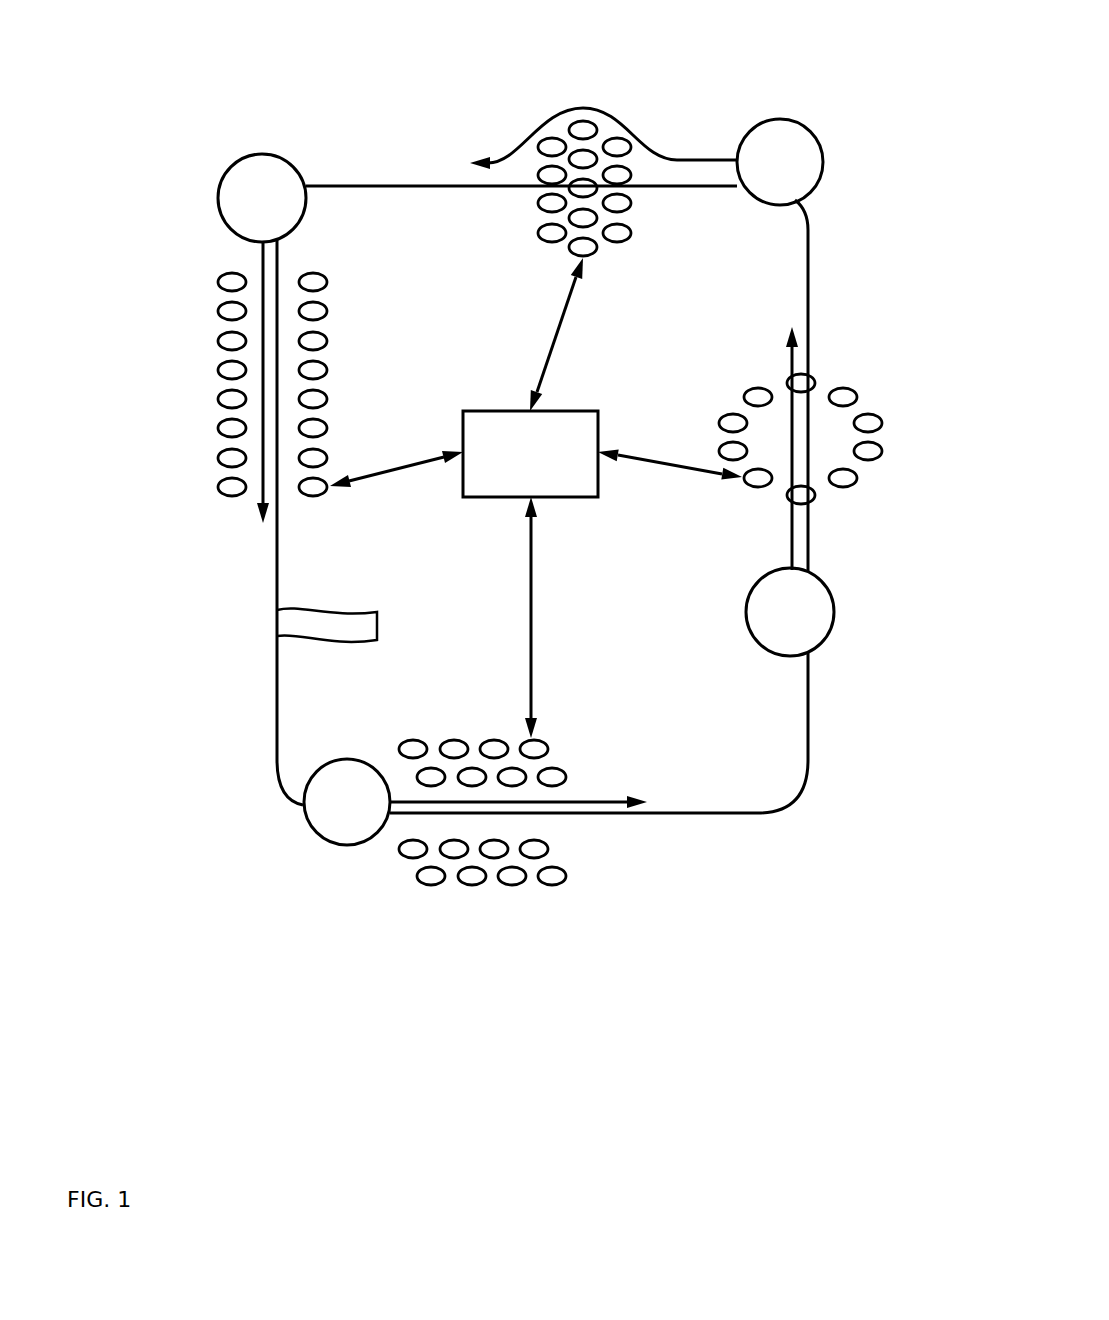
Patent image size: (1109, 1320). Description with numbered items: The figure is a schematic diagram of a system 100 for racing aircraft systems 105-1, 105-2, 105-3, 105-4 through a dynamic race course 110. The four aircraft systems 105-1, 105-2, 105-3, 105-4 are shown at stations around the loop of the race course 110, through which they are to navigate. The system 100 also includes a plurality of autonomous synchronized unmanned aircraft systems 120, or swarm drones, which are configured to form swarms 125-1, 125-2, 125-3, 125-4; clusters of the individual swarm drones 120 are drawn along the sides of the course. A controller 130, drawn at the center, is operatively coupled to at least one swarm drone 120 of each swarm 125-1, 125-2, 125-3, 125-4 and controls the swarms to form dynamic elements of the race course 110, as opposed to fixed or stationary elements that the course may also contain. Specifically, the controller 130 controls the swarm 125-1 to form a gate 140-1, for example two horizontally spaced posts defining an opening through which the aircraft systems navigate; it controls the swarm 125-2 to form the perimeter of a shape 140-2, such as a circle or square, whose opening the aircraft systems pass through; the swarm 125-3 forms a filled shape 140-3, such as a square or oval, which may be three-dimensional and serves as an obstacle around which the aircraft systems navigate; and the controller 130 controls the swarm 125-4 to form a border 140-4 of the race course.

The system 100 is at (286, 108).
The race course 110 is at (811, 270).
The aircraft system 105-1 is at (347, 802).
The aircraft system 105-2 is at (790, 612).
The aircraft system 105-3 is at (780, 162).
The aircraft system 105-4 is at (262, 198).
The autonomous synchronized unmanned aircraft system 120 is at (494, 740).
The swarm 125-1 is at (494, 825).
The swarm 125-2 is at (878, 360).
The swarm 125-3 is at (517, 103).
The swarm 125-4 is at (218, 252).
The controller 130 is at (536, 498).
The gate 140-1 is at (613, 846).
The perimeter of a shape 140-2 is at (853, 532).
The filled shape 140-3 is at (493, 115).
The border 140-4 is at (230, 540).